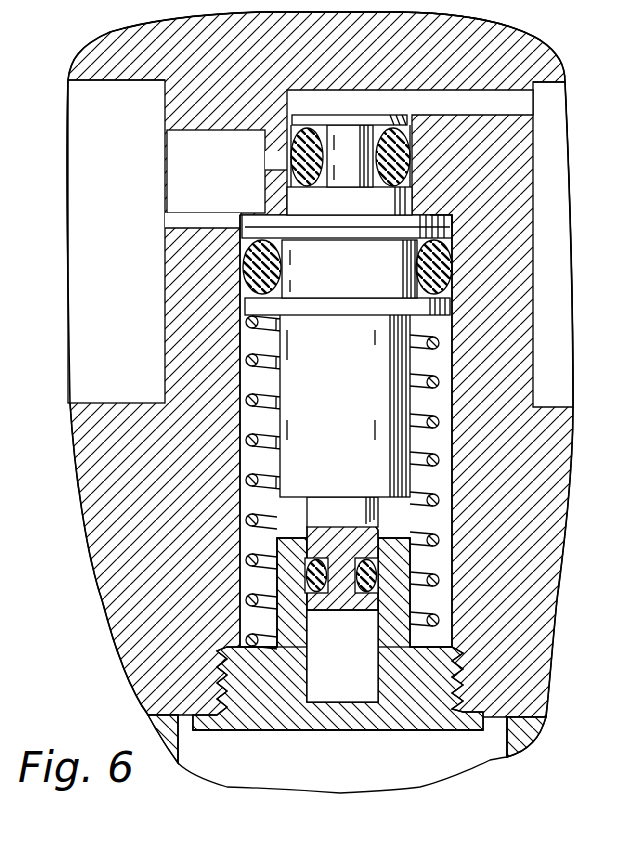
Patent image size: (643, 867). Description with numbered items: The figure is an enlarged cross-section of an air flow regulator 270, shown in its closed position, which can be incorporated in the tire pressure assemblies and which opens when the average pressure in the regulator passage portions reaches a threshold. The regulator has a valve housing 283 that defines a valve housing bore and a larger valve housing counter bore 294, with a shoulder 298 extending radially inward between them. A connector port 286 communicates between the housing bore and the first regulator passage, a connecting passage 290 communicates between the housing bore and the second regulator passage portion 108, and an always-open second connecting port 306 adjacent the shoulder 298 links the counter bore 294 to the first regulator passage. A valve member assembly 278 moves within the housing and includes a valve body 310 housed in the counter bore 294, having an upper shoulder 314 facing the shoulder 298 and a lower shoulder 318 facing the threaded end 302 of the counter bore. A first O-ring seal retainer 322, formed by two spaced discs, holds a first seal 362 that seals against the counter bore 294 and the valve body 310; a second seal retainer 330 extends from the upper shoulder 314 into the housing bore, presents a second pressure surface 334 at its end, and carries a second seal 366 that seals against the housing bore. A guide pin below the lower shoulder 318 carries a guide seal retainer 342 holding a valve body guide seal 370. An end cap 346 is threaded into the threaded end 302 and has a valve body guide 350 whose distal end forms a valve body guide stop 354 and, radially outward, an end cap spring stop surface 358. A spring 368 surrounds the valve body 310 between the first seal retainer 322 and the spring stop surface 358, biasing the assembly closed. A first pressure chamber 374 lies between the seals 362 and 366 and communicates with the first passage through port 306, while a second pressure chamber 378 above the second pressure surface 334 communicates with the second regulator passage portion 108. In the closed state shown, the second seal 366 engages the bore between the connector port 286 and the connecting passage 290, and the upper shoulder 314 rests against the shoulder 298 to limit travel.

The second regulator passage portion 108 is at (533, 235).
The air flow regulator 270 is at (427, 752).
The valve member assembly 278 is at (222, 382).
The valve housing 283 is at (180, 292).
The connector port 286 is at (287, 158).
The connecting passage 290 is at (465, 95).
The valve housing counter bore 294 is at (437, 445).
The shoulder 298 is at (455, 223).
The threaded end 302 is at (462, 683).
The second connecting port 306 is at (242, 214).
The valve body 310 is at (368, 368).
The upper shoulder 314 is at (425, 212).
The lower shoulder 318 is at (305, 498).
The first O-ring seal retainer 322 is at (447, 307).
The second seal retainer 330 is at (297, 117).
The second pressure surface 334 is at (336, 115).
The guide seal retainer 342 is at (340, 600).
The end cap 346 is at (272, 722).
The valve body guide 350 is at (385, 553).
The valve body guide stop 354 is at (410, 535).
The end cap spring stop surface 358 is at (433, 645).
The first seal 362 is at (438, 270).
The second seal 366 is at (395, 160).
The spring 368 is at (433, 382).
The valve body guide seal 370 is at (372, 575).
The first pressure chamber 374 is at (240, 222).
The second pressure chamber 378 is at (412, 112).